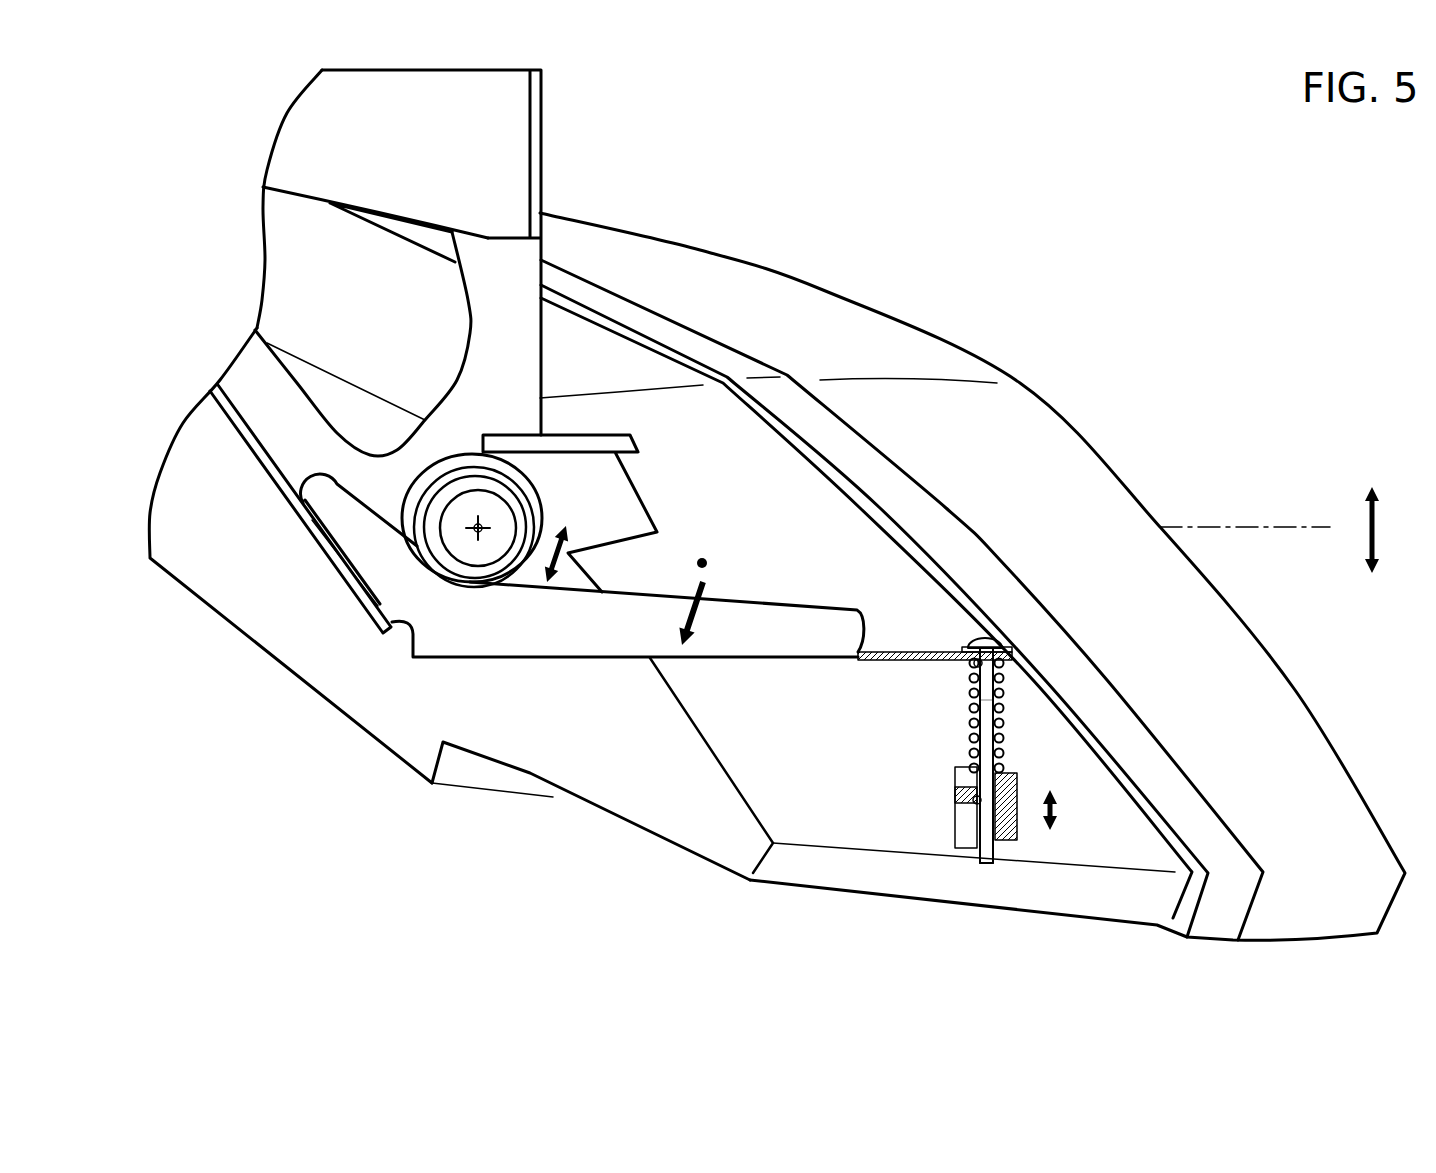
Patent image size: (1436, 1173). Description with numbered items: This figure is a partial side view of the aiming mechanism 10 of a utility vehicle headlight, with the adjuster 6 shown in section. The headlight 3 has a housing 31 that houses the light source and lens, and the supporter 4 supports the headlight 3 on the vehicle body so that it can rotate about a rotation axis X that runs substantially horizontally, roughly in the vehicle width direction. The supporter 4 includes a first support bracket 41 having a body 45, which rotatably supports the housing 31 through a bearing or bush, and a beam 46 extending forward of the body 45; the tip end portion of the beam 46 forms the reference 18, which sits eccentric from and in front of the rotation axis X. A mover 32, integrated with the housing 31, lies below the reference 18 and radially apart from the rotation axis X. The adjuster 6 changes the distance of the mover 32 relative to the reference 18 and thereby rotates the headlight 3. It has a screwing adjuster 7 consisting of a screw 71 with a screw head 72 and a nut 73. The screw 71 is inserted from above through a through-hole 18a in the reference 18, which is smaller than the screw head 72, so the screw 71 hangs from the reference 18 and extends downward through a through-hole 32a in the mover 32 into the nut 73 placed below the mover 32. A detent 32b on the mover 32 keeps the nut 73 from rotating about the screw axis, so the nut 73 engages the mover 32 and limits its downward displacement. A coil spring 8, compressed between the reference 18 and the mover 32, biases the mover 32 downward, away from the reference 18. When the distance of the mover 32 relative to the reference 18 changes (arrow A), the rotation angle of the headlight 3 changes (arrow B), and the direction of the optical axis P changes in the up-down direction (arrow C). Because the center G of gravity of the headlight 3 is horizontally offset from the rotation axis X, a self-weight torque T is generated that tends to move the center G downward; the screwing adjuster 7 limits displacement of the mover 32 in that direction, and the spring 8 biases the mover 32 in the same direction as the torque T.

The headlight 3 is at (826, 278).
The supporter 4 is at (355, 687).
The adjuster 6 is at (1020, 678).
The screwing adjuster 7 is at (1026, 714).
The spring 8 is at (1000, 748).
The aiming mechanism 10 is at (412, 899).
The reference 18 is at (962, 633).
The through-hole 18a is at (977, 666).
The housing 31 is at (687, 822).
The mover 32 is at (955, 780).
The through-hole 32a is at (977, 800).
The detent 32b is at (1012, 840).
The first support bracket 41 is at (327, 567).
The body 45 is at (545, 355).
The beam 46 is at (603, 658).
The screw 71 is at (977, 753).
The screw head 72 is at (975, 650).
The nut 73 is at (977, 833).
The rotation axis X is at (477, 528).
The center of gravity G is at (705, 555).
The self-weight torque T is at (651, 628).
The arrow B is at (568, 543).
The arrow A is at (1067, 810).
The arrow C is at (1389, 530).
The optical axis P is at (1218, 527).